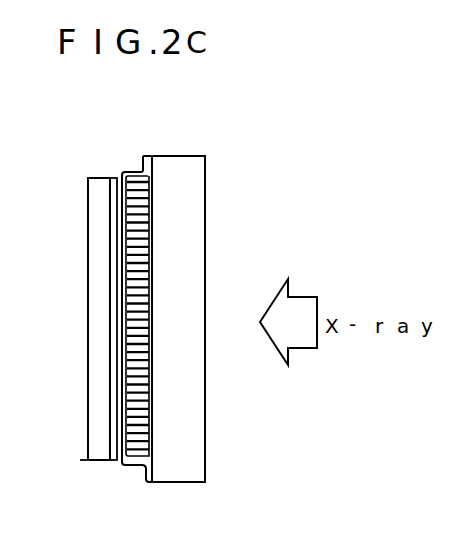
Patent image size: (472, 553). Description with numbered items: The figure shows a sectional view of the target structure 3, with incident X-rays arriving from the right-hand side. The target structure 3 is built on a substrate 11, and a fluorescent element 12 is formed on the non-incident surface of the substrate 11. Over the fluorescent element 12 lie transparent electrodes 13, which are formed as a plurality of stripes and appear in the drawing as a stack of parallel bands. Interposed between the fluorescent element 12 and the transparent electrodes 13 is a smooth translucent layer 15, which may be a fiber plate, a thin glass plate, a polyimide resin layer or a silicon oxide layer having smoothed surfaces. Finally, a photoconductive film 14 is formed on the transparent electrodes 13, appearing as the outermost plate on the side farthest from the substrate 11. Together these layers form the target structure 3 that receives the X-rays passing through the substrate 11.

The target structure 3 is at (174, 151).
The substrate 11 is at (207, 205).
The fluorescent element 12 is at (133, 466).
The transparent electrodes 13 is at (126, 269).
The photoconductive film 14 is at (88, 317).
The smooth translucent layer 15 is at (117, 177).